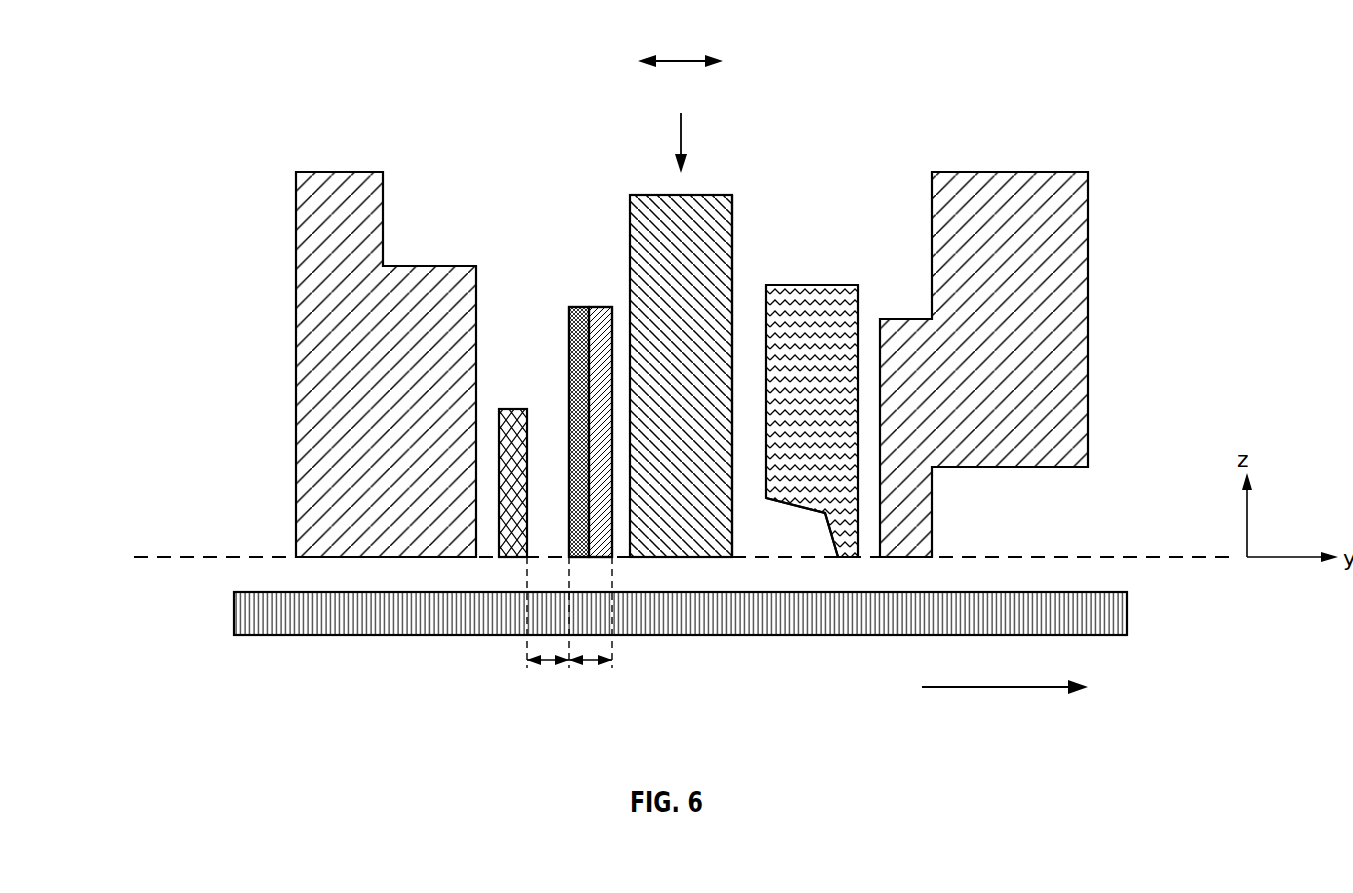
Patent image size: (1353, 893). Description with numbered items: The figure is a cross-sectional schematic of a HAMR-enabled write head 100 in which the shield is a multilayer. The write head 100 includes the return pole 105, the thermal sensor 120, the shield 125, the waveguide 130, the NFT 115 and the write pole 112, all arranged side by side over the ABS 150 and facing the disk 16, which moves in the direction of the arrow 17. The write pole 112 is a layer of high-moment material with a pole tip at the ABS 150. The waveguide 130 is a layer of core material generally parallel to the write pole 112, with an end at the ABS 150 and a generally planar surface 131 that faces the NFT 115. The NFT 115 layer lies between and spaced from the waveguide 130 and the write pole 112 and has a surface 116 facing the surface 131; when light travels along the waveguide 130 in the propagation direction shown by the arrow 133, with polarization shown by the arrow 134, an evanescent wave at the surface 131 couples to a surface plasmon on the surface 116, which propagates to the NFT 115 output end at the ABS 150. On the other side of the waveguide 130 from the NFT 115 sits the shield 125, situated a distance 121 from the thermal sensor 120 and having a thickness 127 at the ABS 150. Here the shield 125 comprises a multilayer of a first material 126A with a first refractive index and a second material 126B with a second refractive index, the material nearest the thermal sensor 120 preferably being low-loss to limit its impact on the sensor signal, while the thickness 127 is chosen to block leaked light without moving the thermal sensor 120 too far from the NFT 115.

The write head 100 is at (140, 208).
The return pole 105 is at (296, 335).
The write pole 112 is at (1088, 308).
The NFT 115 is at (827, 285).
The surface of the NFT 116 is at (767, 457).
The thermal sensor 120 is at (522, 408).
The distance 121 is at (548, 665).
The shield 125 is at (558, 371).
The first material 126A is at (569, 337).
The second material 126B is at (605, 307).
The thickness 127 is at (587, 668).
The waveguide 130 is at (650, 195).
The surface of the waveguide 131 is at (733, 232).
The arrow 133 is at (681, 138).
The arrow 134 is at (681, 61).
The ABS 150 is at (184, 559).
The disk 16 is at (1127, 610).
The arrow 17 is at (1005, 687).